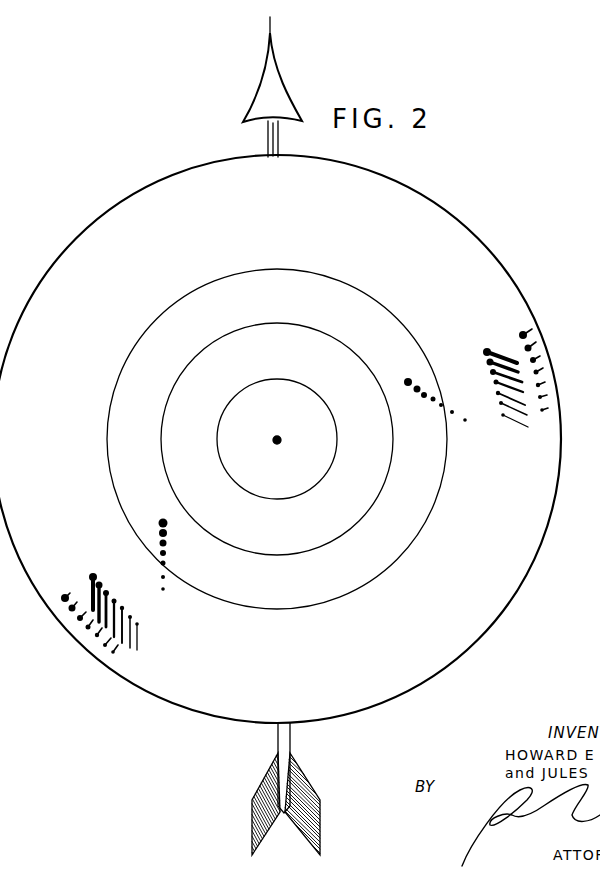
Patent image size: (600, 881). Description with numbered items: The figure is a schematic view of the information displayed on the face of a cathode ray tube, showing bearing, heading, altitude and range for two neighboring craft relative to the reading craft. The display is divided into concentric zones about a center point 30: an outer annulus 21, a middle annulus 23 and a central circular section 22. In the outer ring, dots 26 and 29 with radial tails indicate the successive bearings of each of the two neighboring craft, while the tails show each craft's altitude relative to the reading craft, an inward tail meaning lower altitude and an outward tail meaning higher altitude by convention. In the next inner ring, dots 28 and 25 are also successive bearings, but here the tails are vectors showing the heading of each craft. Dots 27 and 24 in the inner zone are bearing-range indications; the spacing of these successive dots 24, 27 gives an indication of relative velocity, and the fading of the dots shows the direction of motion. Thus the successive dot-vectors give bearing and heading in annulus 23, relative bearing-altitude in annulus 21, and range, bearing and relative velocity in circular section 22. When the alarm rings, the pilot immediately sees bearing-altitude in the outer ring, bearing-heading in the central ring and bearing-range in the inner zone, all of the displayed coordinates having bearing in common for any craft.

The annulus 21 is at (520, 520).
The circular section 22 is at (418, 490).
The annulus 23 is at (505, 492).
The dots 24 is at (406, 386).
The dots 25 is at (489, 359).
The dots 26 is at (522, 338).
The dots 27 is at (168, 524).
The dots 28 is at (102, 592).
The dots 29 is at (68, 600).
The center point 30 is at (282, 441).